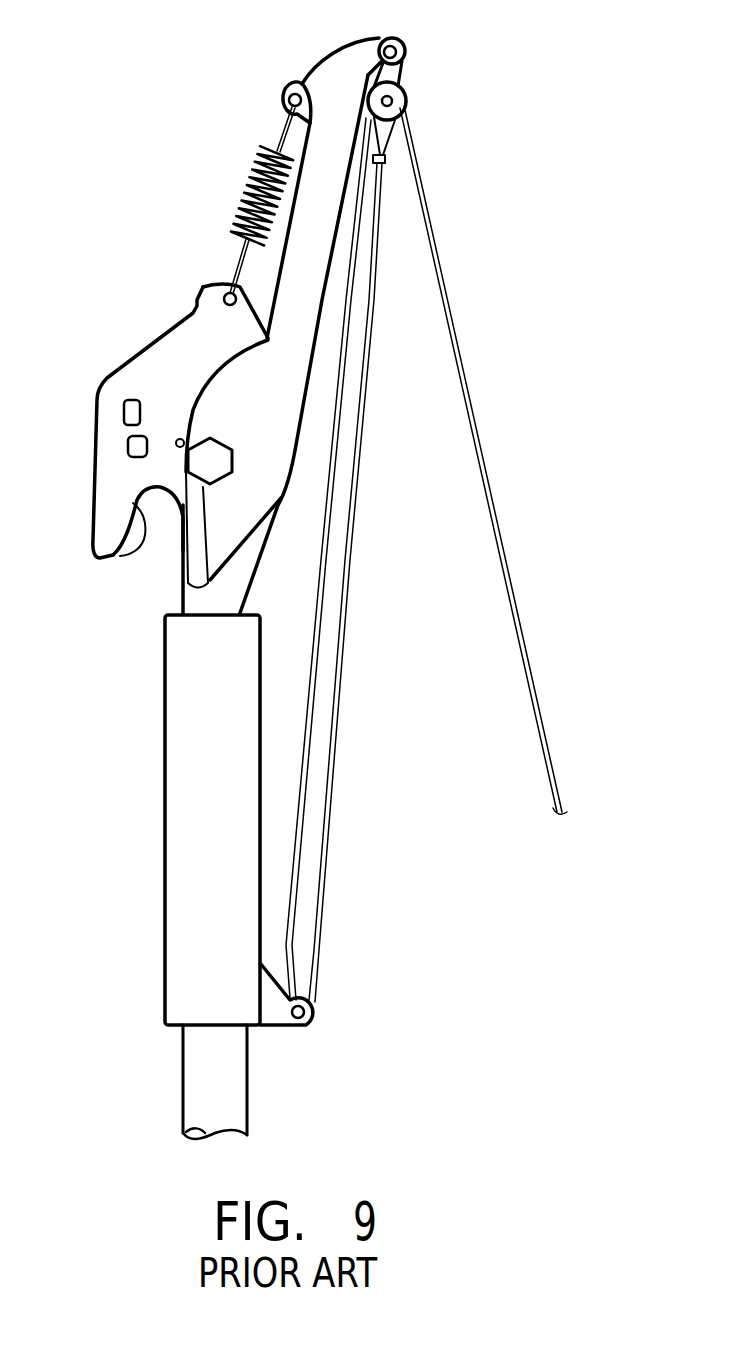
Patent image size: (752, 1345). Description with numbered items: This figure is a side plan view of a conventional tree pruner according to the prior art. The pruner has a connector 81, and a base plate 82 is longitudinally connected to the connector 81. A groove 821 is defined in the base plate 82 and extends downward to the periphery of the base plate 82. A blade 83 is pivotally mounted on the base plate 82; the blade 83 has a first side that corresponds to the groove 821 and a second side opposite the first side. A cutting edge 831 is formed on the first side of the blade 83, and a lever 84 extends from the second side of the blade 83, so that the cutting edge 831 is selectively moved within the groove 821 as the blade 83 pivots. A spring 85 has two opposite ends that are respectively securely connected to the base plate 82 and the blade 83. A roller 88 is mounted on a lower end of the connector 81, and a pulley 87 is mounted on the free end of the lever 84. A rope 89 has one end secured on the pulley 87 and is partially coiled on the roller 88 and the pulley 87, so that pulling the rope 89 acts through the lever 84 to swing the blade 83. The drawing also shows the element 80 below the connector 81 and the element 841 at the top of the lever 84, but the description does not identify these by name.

The pole 80 is at (228, 1083).
The connector 81 is at (205, 863).
The base plate 82 is at (160, 350).
The groove 821 is at (137, 551).
The blade 83 is at (258, 490).
The cutting edge 831 is at (195, 548).
The lever 84 is at (297, 308).
The pivot 841 is at (383, 36).
The spring 85 is at (243, 197).
The pulley 87 is at (400, 104).
The roller 88 is at (312, 1019).
The rope 89 is at (508, 589).